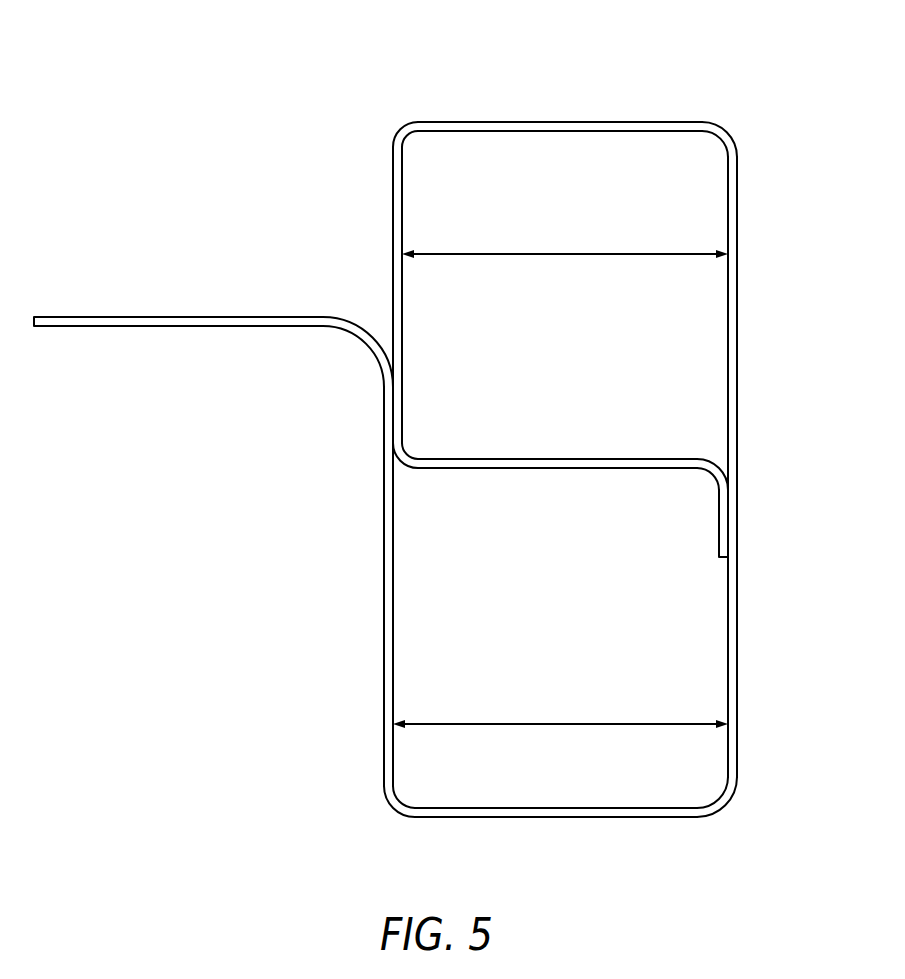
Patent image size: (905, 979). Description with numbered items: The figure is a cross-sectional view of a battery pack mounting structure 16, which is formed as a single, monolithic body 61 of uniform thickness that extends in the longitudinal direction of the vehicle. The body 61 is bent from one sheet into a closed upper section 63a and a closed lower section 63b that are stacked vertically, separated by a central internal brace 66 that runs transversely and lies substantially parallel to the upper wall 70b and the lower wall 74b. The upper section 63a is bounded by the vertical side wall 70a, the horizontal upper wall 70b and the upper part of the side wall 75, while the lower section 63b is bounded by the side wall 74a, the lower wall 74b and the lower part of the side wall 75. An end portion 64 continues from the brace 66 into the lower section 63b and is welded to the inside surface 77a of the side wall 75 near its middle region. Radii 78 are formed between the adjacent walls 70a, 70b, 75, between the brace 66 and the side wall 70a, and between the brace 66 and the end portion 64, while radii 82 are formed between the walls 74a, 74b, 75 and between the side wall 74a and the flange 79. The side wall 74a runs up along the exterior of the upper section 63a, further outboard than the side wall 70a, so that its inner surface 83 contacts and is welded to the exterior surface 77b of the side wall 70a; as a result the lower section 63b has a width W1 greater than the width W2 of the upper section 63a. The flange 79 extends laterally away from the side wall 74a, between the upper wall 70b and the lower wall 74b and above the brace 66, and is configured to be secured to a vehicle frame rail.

The mounting structure 16 is at (352, 96).
The body 61 is at (754, 666).
The closed upper section 63a is at (700, 318).
The closed lower section 63b is at (718, 619).
The end portion 64 is at (722, 522).
The central internal brace 66 is at (605, 465).
The side wall 70a is at (392, 192).
The upper wall 70b is at (602, 120).
The side wall 74a is at (385, 665).
The lower wall 74b is at (640, 820).
The side wall 75 is at (738, 213).
The inside surface 77a is at (728, 668).
The exterior surface 77b is at (392, 283).
The radii 78 is at (414, 122).
The flange 79 is at (100, 302).
The radii 82 is at (360, 343).
The inner surface 83 is at (392, 617).
The width W1 is at (580, 735).
The width W2 is at (531, 252).